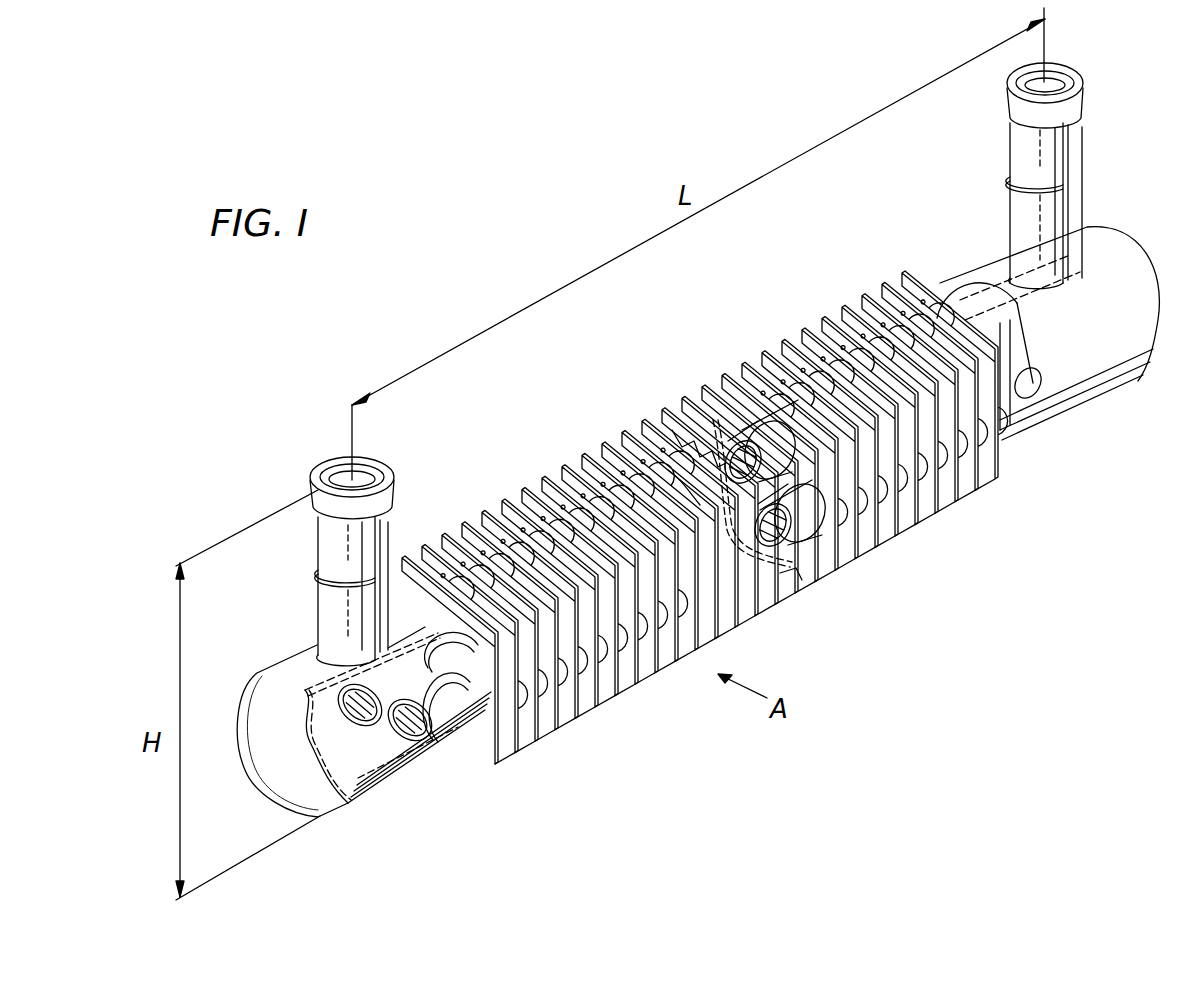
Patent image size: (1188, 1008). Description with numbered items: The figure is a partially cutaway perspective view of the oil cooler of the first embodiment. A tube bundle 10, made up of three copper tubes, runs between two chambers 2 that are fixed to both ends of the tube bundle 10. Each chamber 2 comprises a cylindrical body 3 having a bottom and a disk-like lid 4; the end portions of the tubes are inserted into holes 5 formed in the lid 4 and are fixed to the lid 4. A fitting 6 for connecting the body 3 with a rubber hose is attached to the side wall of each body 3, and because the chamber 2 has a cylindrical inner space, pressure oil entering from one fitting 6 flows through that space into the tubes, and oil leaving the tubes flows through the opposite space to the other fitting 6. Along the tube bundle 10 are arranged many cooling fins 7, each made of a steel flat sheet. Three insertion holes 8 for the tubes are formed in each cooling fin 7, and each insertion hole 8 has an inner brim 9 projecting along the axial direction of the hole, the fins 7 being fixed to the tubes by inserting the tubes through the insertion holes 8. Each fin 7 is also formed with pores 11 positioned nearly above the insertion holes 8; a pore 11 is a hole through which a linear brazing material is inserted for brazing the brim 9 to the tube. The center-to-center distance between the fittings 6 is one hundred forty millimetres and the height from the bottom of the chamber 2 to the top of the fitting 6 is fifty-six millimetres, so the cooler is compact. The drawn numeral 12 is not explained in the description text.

The chamber 2 is at (1143, 238).
The cylindrical body 3 is at (332, 800).
The lid 4 is at (440, 730).
The hole 5 is at (398, 735).
The fitting 6 is at (388, 527).
The cooling fin 7 is at (830, 457).
The insertion hole 8 is at (660, 490).
The inner brim 9 is at (707, 503).
The tube bundle 10 is at (785, 612).
The pore 11 is at (774, 420).
The fin spacer 12 is at (773, 420).